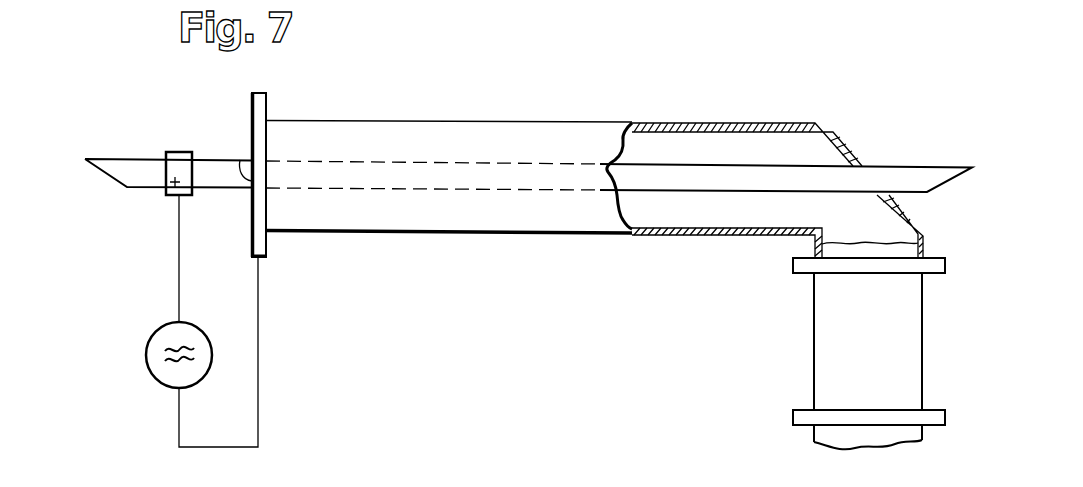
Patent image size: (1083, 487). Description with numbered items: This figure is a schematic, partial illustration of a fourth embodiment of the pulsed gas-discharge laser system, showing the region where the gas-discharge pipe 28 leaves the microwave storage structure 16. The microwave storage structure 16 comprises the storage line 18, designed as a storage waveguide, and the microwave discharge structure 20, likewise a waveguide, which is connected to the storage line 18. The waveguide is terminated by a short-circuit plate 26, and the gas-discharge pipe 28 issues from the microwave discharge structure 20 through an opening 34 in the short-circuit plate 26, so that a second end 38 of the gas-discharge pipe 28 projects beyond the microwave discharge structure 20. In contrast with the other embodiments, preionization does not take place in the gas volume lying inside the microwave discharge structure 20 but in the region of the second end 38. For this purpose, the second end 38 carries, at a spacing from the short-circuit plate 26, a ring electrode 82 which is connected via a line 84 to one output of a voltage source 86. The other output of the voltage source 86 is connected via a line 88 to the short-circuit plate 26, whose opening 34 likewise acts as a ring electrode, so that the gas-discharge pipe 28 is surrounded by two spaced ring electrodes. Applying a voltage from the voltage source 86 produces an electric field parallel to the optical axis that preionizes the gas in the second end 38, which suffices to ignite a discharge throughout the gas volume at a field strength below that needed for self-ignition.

The microwave storage structure 16 is at (785, 296).
The storage line 18 is at (832, 357).
The microwave discharge structure 20 is at (532, 138).
The short-circuit plate 26 is at (263, 243).
The gas-discharge pipe 28 is at (224, 200).
The opening 34 is at (258, 164).
The second end 38 is at (127, 163).
The ring electrode 82 is at (168, 197).
The line 84 is at (178, 292).
The voltage source 86 is at (152, 359).
The line 88 is at (260, 367).